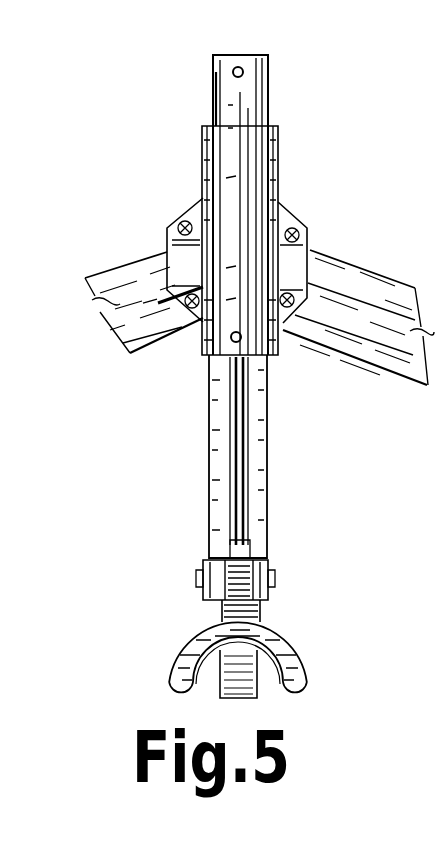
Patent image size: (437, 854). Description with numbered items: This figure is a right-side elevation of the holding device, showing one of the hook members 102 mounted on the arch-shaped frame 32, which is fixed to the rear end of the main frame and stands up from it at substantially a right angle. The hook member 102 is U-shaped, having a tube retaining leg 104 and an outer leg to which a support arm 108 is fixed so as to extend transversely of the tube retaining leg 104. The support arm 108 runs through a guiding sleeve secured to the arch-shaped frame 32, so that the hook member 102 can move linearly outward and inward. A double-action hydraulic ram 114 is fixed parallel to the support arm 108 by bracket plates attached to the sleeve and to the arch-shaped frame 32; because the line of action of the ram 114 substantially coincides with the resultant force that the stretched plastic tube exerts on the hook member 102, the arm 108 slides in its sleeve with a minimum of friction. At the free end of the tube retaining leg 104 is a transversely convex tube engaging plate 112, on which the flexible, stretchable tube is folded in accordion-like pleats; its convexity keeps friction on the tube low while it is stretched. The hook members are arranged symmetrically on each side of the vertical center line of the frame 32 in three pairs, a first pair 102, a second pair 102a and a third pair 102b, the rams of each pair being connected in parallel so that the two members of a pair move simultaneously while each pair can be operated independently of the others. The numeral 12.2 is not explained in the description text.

The double-action hydraulic ram 114 is at (238, 172).
The left rail section 12.2 is at (168, 251).
The arch-shaped frame 32 is at (335, 268).
The support arm 108 is at (267, 423).
The hook member 102 is at (166, 591).
The second pair of hook members 102a is at (166, 581).
The third pair of hook members 102b is at (184, 625).
The tube engaging plate 112 is at (272, 652).
The tube retaining leg 104 is at (300, 660).